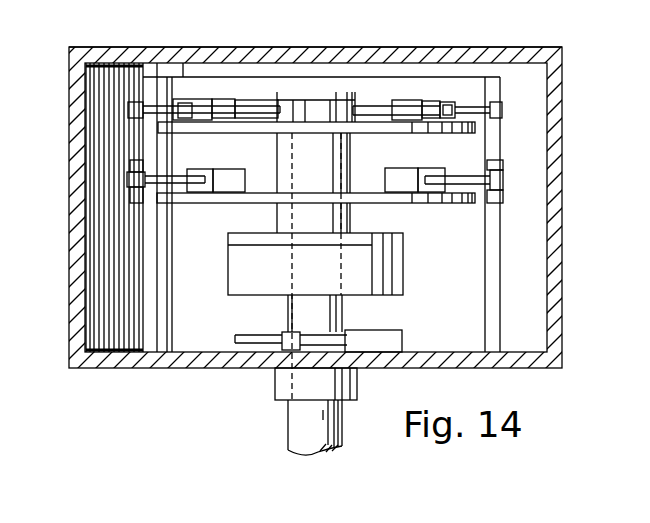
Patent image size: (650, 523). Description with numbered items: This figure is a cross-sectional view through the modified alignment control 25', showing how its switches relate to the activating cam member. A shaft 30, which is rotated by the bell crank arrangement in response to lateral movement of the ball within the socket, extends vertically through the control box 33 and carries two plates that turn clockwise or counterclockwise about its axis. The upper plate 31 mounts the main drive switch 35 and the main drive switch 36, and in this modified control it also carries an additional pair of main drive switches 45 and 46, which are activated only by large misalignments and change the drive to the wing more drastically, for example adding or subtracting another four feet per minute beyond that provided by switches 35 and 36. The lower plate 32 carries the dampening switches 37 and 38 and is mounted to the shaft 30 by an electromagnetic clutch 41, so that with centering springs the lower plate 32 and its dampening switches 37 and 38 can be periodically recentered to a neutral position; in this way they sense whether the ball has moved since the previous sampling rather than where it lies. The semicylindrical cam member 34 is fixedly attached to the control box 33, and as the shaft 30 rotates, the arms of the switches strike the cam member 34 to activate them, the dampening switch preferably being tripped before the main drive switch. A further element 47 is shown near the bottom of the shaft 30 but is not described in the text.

The modified alignment control 25' is at (325, 193).
The control box 33 is at (175, 53).
The main drive switch 36 is at (198, 97).
The main drive switch 46 is at (255, 98).
The semicylindrical cam member 34 is at (313, 82).
The main drive switch 45 is at (370, 102).
The main drive switch 35 is at (432, 100).
The dampening switch 38 is at (215, 171).
The upper plate 31 is at (283, 124).
The dampening switch 37 is at (405, 168).
The lower plate 32 is at (381, 203).
The electromagnetic clutch 41 is at (228, 263).
The bottom block 47 is at (390, 335).
The shaft 30 is at (297, 428).